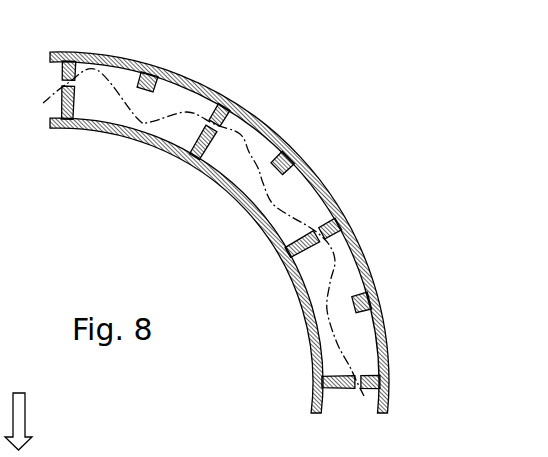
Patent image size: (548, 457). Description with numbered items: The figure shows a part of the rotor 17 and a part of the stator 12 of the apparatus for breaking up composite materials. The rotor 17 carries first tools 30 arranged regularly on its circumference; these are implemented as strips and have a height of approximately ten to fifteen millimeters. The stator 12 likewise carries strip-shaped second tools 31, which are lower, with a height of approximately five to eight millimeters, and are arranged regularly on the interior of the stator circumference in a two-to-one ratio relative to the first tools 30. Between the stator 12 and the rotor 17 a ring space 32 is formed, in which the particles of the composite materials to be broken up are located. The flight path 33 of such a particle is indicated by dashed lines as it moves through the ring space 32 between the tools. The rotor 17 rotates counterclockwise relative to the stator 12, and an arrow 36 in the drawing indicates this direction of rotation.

The stator 12 is at (322, 183).
The rotor 17 is at (117, 133).
The first tools 30 is at (205, 151).
The second tools 31 is at (152, 70).
The ring space 32 is at (262, 145).
The flight path 33 is at (267, 194).
The direction arrow 36 is at (25, 418).